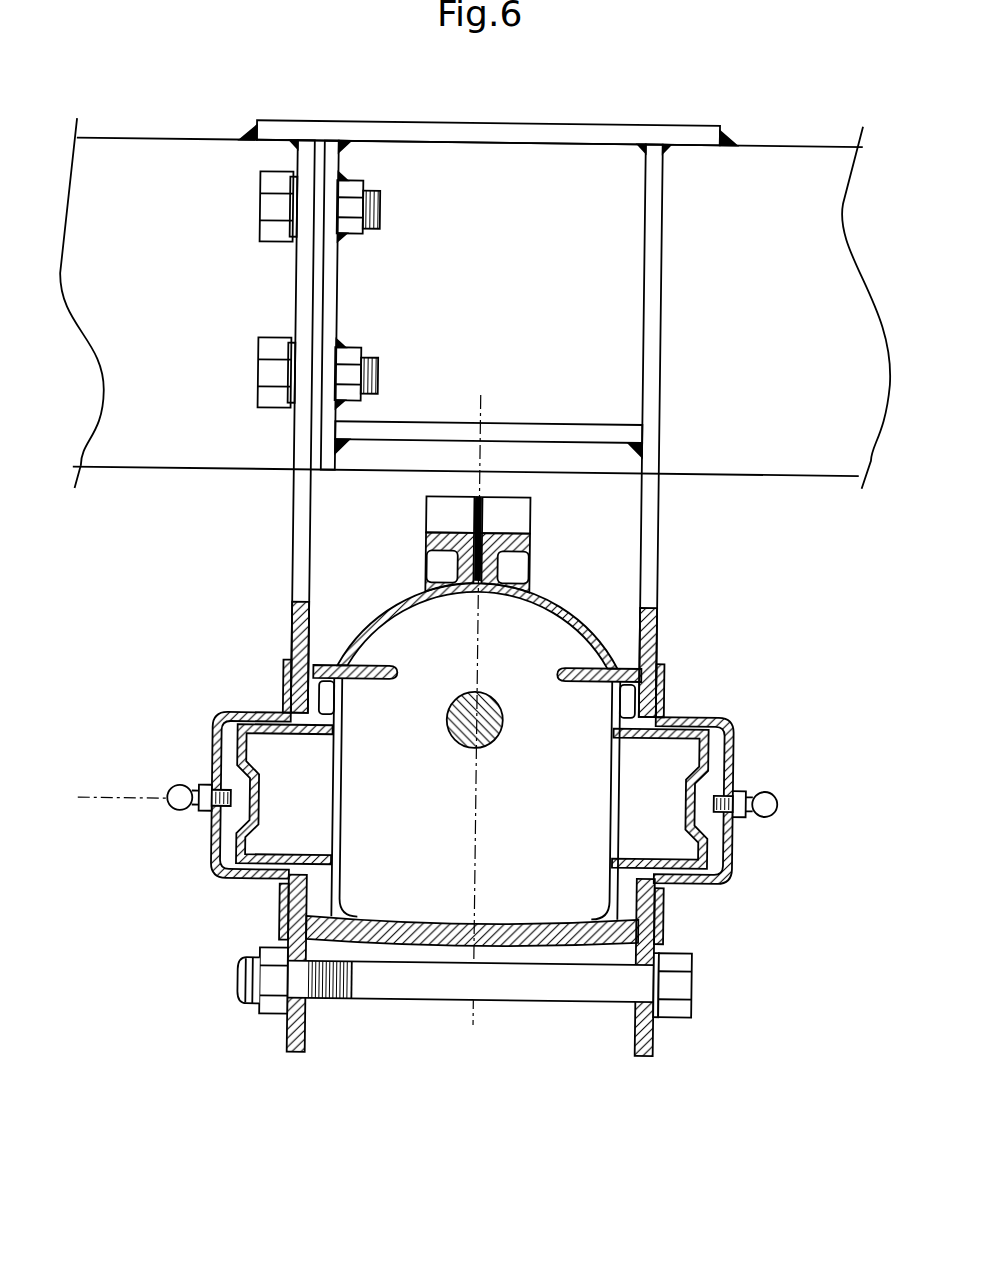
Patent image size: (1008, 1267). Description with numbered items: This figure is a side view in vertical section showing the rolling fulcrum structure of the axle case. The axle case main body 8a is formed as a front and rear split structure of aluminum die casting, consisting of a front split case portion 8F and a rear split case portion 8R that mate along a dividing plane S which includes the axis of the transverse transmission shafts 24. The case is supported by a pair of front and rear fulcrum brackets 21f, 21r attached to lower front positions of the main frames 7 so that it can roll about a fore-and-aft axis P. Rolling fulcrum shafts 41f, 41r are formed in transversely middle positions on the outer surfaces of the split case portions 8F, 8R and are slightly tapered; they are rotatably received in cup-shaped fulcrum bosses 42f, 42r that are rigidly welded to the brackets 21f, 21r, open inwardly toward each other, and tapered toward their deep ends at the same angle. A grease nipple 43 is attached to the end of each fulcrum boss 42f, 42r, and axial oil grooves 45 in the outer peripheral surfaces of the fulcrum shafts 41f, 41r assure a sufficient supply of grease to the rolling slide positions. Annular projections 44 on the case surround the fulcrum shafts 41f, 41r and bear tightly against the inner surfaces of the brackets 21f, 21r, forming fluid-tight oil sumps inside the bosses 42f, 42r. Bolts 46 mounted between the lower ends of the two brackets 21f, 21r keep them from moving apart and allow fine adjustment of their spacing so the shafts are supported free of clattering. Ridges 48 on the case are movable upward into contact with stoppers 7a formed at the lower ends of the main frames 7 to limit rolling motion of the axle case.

The main frames 7 is at (177, 462).
The stoppers 7a is at (512, 441).
The axle case main body 8a is at (571, 606).
The ridges 48 is at (428, 503).
The annular projections 44 is at (291, 627).
The front fulcrum boss 42f is at (229, 716).
The rear fulcrum boss 42r is at (739, 847).
The front rolling fulcrum shaft 41f is at (243, 751).
The rear rolling fulcrum shaft 41r is at (706, 752).
The grease nipple 43 is at (178, 818).
The axial oil grooves 45 is at (262, 877).
The transverse transmission shafts 24 is at (503, 728).
The front split case portion 8F is at (415, 941).
The rear split case portion 8R is at (556, 939).
The bolts 46 is at (504, 993).
The front fulcrum bracket 21f is at (293, 1046).
The rear fulcrum bracket 21r is at (655, 1040).
The dividing plane S is at (477, 410).
The fore-and-aft axis P is at (111, 794).